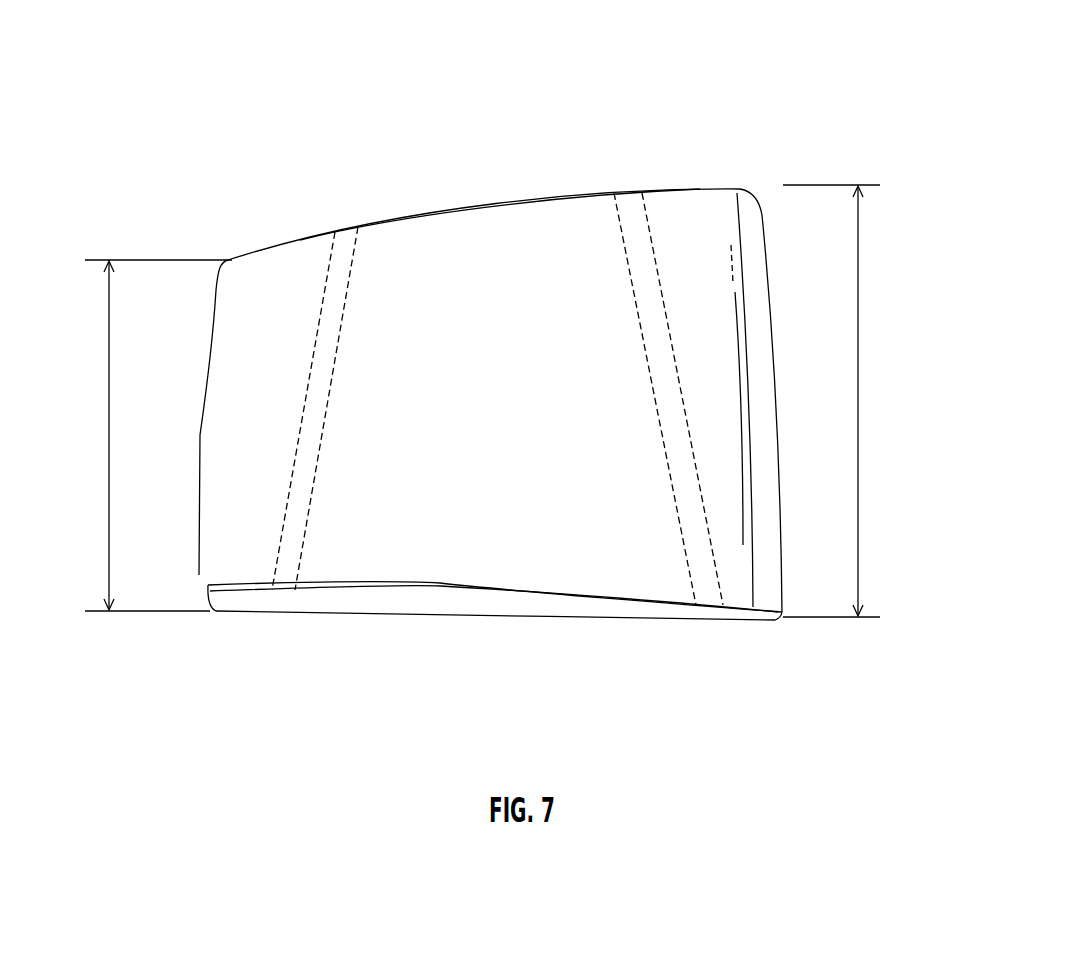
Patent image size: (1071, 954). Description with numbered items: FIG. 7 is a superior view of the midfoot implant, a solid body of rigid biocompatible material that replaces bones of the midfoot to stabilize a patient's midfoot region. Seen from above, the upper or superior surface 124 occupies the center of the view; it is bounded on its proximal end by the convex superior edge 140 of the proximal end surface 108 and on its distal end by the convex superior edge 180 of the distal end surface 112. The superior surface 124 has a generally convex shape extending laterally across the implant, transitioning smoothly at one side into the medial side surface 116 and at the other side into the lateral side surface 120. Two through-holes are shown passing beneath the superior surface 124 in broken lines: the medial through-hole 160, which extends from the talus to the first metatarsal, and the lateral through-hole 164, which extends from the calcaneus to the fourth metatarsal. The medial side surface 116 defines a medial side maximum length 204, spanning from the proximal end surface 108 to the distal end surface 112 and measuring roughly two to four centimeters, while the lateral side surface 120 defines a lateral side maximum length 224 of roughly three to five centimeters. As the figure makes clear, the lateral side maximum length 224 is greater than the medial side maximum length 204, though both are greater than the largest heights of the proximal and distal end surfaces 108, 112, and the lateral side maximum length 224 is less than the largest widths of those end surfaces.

The proximal end surface 108 is at (540, 620).
The distal end surface 112 is at (398, 203).
The medial side surface 116 is at (199, 435).
The lateral side surface 120 is at (789, 381).
The superior surface 124 is at (577, 227).
The convex superior edge 140 is at (359, 582).
The medial through-hole 160 is at (335, 357).
The lateral through-hole 164 is at (648, 360).
The convex superior edge 180 is at (477, 205).
The medial side maximum length 204 is at (109, 340).
The lateral side maximum length 224 is at (860, 278).